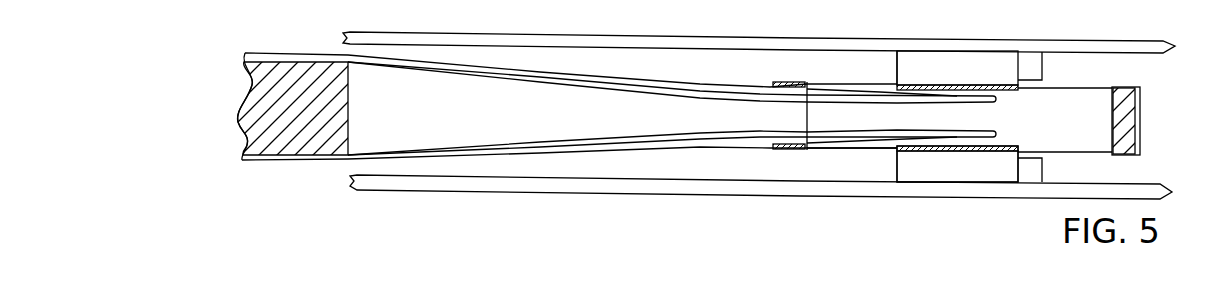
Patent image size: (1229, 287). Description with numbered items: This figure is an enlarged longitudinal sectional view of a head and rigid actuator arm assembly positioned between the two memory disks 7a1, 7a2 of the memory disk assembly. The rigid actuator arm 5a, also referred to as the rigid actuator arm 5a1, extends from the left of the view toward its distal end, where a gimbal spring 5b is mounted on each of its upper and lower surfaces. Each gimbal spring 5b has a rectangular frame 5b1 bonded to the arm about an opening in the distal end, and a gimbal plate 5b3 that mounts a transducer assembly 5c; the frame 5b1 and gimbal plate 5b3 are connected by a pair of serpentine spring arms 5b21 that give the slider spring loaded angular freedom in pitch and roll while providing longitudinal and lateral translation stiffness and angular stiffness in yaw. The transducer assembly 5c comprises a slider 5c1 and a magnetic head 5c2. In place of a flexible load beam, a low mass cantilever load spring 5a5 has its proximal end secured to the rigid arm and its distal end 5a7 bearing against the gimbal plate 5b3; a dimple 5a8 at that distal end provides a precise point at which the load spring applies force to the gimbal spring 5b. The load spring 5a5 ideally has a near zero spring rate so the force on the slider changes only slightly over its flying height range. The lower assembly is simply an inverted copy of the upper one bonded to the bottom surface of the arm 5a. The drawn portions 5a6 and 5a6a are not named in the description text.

The memory disk 7a1 is at (343, 37).
The memory disk 7a2 is at (350, 183).
The rigid actuator arm 5a is at (670, 153).
The rigid actuator arm 5a1 is at (758, 137).
The cantilever load spring 5a5 is at (690, 97).
The upper skin sheet 5a6 is at (742, 90).
The end block 5a6a is at (1100, 123).
The distal end 5a7 is at (993, 100).
The dimple 5a8 is at (958, 143).
The gimbal spring 5b is at (880, 183).
The frame 5b1 is at (790, 152).
The serpentine spring arms 5b21 is at (863, 152).
The gimbal plate 5b3 is at (1000, 157).
The transducer assembly 5c is at (967, 81).
The slider 5c1 is at (898, 63).
The magnetic head 5c2 is at (1033, 60).